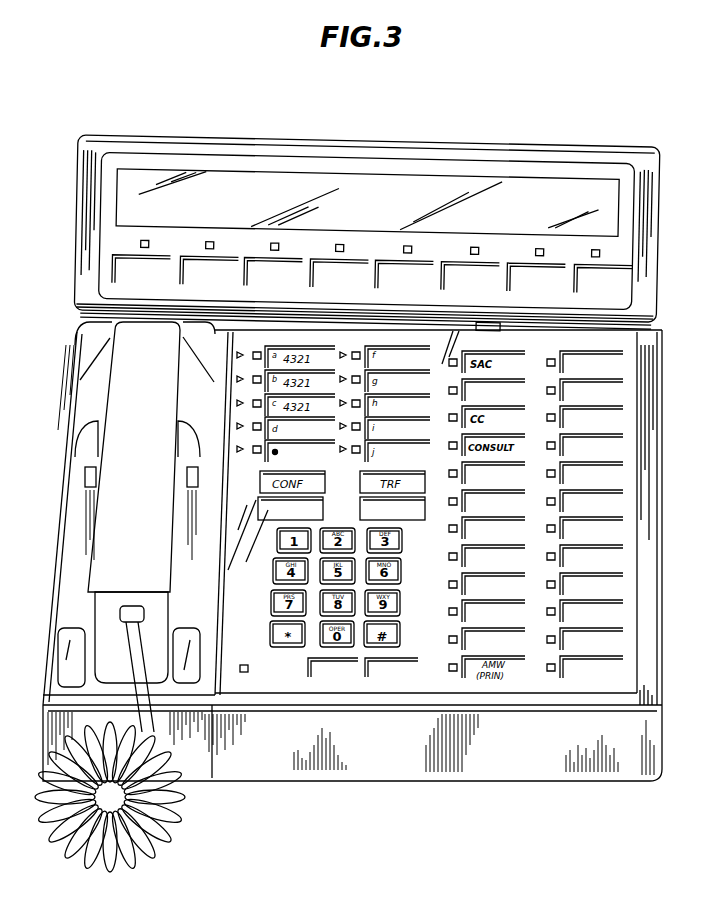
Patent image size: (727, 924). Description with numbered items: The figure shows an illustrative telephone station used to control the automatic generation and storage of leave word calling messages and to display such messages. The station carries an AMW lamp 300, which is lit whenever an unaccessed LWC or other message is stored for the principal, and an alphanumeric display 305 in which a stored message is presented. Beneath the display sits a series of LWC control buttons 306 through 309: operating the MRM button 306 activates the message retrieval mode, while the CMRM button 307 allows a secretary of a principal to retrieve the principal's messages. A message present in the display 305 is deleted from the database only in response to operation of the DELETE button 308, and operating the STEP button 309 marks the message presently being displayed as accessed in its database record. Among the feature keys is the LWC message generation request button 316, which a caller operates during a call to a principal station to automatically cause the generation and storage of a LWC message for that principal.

The AMW lamp 300 is at (248, 669).
The alphanumeric display 305 is at (525, 180).
The MRM button 306 is at (323, 258).
The CMRM button 307 is at (388, 258).
The DELETE button 308 is at (534, 258).
The STEP button 309 is at (456, 258).
The LWC message generation request button 316 is at (518, 392).